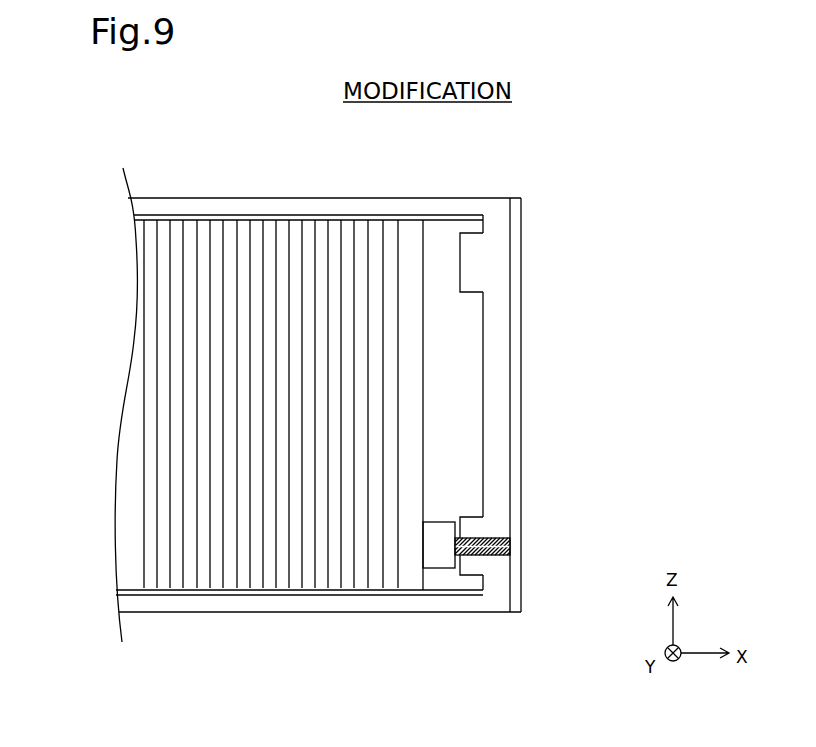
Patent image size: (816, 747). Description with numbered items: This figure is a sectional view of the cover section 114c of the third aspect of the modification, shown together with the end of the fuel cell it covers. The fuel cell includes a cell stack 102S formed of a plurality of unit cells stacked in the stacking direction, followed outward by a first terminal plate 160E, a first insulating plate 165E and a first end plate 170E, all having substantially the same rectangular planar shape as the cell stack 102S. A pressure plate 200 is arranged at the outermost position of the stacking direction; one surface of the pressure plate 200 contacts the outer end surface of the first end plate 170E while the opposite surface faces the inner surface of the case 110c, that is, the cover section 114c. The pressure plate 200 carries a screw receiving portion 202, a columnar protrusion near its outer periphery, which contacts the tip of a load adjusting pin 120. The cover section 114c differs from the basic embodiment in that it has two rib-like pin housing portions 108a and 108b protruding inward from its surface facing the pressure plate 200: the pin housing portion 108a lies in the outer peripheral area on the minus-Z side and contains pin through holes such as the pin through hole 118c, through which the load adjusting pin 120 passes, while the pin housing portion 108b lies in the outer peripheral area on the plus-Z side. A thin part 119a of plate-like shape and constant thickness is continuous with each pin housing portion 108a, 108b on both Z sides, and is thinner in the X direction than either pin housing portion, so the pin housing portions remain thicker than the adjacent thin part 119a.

The case 110c is at (150, 198).
The first terminal plate 160E is at (360, 220).
The first insulating plate 165E is at (364, 218).
The first end plate 170E is at (389, 218).
The pressure plate 200 is at (412, 217).
The thin part 119a is at (488, 223).
The pin housing portion 108b is at (470, 268).
The cover section 114c is at (512, 337).
The screw receiving portion 202 is at (440, 522).
The pin housing portion 108a is at (470, 526).
The load adjusting pin 120 is at (480, 544).
The pin through hole 118c is at (493, 558).
The cell stack 102S is at (250, 600).